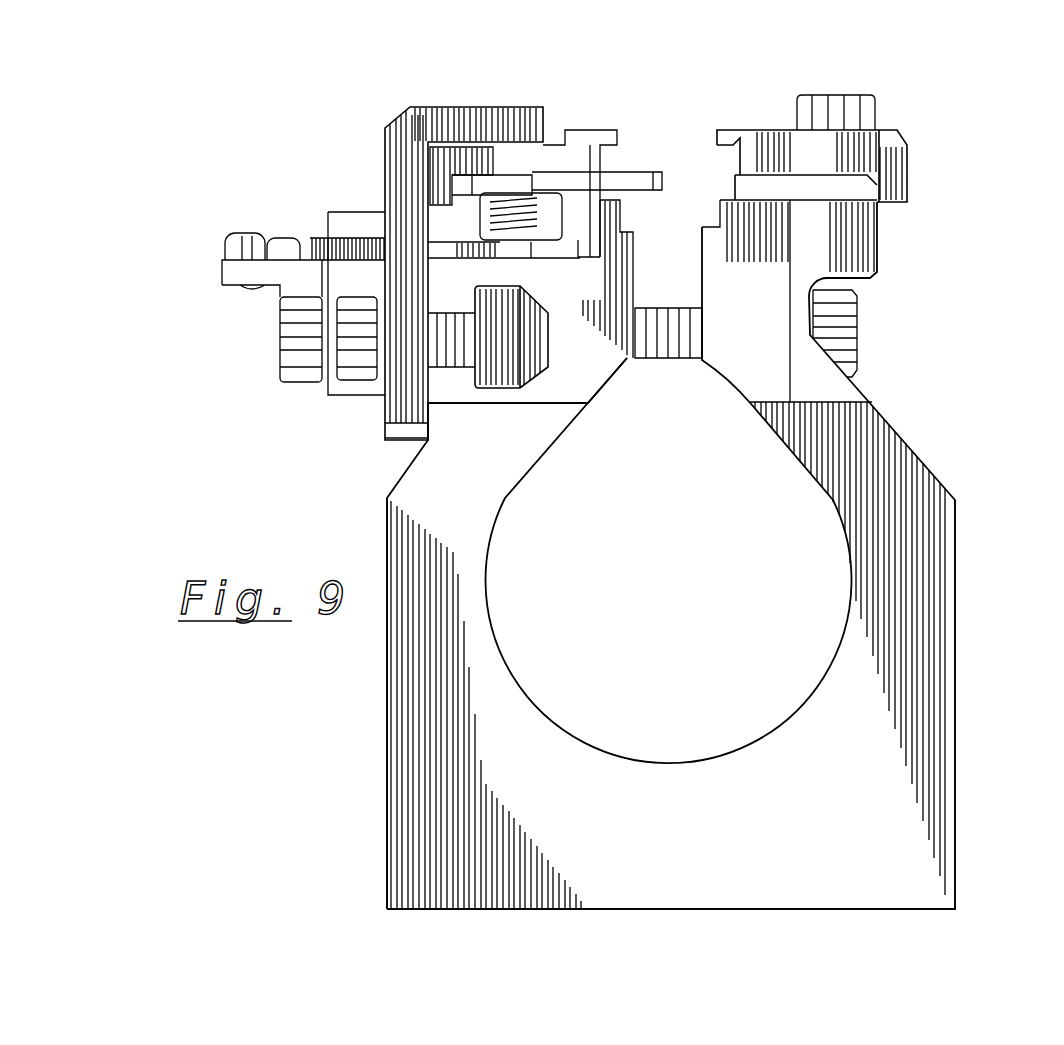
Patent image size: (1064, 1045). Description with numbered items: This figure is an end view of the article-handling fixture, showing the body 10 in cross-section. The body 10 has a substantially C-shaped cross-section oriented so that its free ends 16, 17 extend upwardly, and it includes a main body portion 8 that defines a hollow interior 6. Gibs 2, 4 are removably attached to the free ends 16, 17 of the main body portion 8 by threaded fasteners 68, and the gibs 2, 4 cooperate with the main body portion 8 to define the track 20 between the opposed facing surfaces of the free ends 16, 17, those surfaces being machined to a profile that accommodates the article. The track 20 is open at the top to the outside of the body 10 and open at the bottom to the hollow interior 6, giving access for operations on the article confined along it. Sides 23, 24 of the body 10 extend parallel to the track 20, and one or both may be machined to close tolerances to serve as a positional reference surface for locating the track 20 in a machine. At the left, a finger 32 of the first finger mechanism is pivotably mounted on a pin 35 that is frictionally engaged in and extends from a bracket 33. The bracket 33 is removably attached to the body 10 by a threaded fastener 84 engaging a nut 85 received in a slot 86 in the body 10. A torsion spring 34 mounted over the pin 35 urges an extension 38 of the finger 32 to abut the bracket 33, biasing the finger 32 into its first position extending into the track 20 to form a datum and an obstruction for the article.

The gib 2 is at (549, 160).
The gib 4 is at (833, 156).
The hollow interior 6 is at (688, 610).
The main body portion 8 is at (790, 862).
The body 10 is at (898, 433).
The free end 16 is at (720, 312).
The free end 17 is at (592, 373).
The track 20 is at (684, 162).
The side 23 is at (387, 812).
The side 24 is at (955, 833).
The finger 32 is at (634, 184).
The bracket 33 is at (384, 170).
The torsion spring 34 is at (484, 213).
The pin 35 is at (493, 233).
The extension 38 is at (420, 248).
The threaded fastener 68 is at (845, 102).
The threaded fastener 84 is at (360, 385).
The nut 85 is at (490, 355).
The slot 86 is at (537, 375).